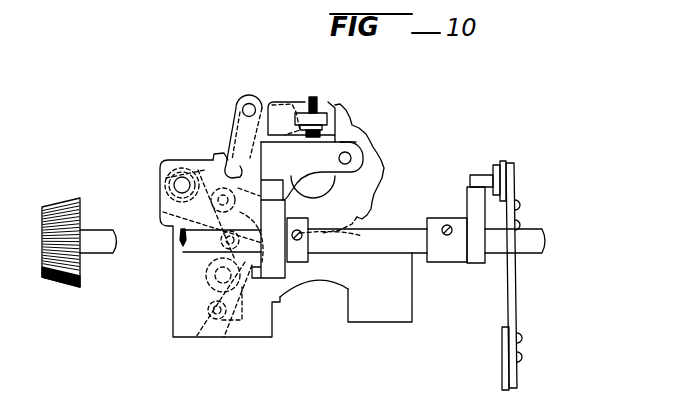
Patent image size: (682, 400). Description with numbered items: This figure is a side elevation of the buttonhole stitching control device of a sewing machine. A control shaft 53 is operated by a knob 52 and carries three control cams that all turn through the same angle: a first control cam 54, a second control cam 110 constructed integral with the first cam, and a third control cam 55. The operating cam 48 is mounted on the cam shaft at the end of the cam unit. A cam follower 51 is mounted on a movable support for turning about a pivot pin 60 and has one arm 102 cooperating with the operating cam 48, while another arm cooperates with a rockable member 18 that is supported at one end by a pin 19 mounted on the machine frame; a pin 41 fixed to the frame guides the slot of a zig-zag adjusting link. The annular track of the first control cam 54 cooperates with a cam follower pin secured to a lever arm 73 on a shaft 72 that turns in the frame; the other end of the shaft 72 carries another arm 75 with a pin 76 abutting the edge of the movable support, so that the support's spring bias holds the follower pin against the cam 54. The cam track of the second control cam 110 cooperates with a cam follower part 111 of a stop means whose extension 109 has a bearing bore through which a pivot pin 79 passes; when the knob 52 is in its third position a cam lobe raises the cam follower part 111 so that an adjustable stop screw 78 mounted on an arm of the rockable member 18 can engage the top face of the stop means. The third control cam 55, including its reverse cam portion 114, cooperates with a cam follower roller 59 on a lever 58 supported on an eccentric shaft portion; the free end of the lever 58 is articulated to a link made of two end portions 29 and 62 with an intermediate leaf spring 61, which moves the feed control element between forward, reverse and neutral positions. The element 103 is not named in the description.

The knob 52 is at (62, 206).
The cam follower 51 is at (166, 213).
The stop lug 103 is at (216, 156).
The rockable member 18 is at (229, 138).
The pin 19 is at (245, 103).
The pivot pin 60 is at (210, 208).
The pin 41 is at (178, 252).
The lever arm 73 is at (210, 280).
The shaft 72 is at (210, 293).
The arm 75 is at (210, 318).
The pin 76 is at (197, 338).
The cam portion 114 is at (226, 338).
The first control cam 54 is at (259, 277).
The arm 102 is at (282, 297).
The second control cam 110 is at (297, 270).
The cam follower part 111 is at (300, 158).
The pivot pin 79 is at (351, 158).
The extension 109 is at (354, 144).
The adjustable stop screw 78 is at (320, 104).
The operating cam 48 is at (344, 116).
The control shaft 53 is at (391, 232).
The third control cam 55 is at (478, 265).
The cam follower roller 59 is at (478, 175).
The lever 58 is at (505, 165).
The end portion 29 is at (514, 186).
The leaf spring 61 is at (527, 294).
The end portion 62 is at (505, 357).